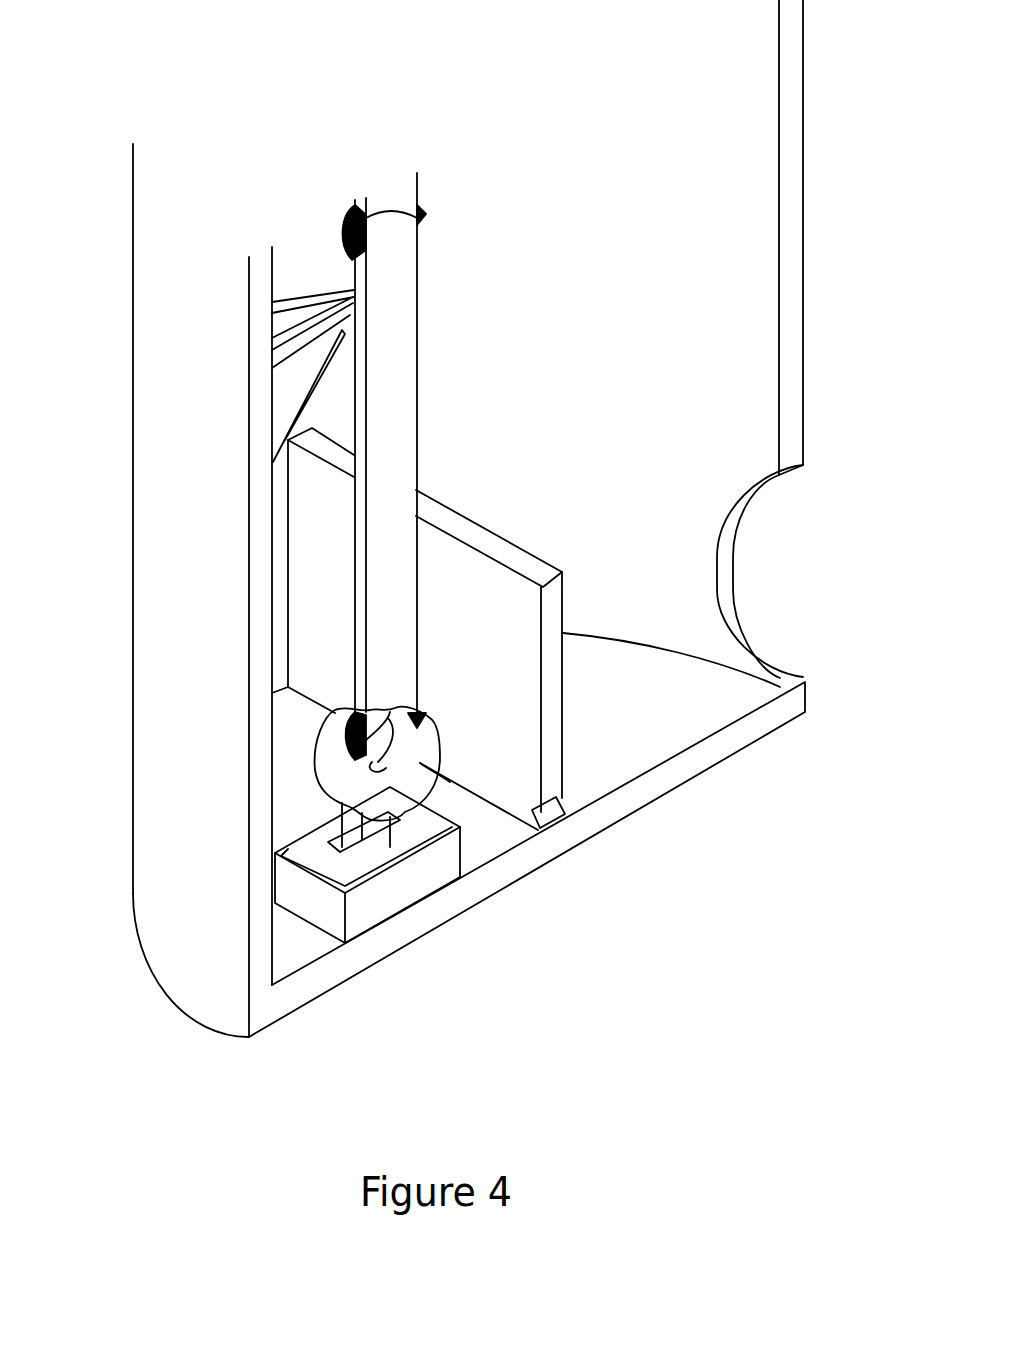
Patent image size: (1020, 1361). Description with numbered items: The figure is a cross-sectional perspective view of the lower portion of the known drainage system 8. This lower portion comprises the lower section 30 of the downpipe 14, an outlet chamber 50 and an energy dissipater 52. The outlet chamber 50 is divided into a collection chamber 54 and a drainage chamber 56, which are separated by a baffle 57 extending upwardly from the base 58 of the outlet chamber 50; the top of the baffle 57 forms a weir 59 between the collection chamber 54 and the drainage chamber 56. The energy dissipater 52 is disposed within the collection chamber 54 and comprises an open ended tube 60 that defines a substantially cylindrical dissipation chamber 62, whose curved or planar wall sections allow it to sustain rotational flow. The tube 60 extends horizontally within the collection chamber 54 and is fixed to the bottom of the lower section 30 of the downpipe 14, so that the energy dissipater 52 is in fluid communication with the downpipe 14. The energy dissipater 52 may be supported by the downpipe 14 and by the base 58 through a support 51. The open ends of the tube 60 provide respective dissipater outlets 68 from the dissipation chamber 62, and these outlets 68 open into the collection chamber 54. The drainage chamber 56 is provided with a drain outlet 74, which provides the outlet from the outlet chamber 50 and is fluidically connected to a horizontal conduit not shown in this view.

The drainage system 8 is at (838, 157).
The downpipe 14 is at (346, 198).
The lower section of the downpipe 30 is at (408, 285).
The outlet chamber 50 is at (184, 522).
The support 51 is at (300, 893).
The energy dissipater 52 is at (304, 768).
The collection chamber 54 is at (369, 570).
The drainage chamber 56 is at (533, 672).
The baffle 57 is at (508, 763).
The base 58 is at (675, 792).
The weir 59 is at (503, 538).
The open ended tube 60 is at (413, 800).
The dissipation chamber 62 is at (422, 763).
The dissipater outlets 68 is at (372, 762).
The drain outlet 74 is at (735, 583).